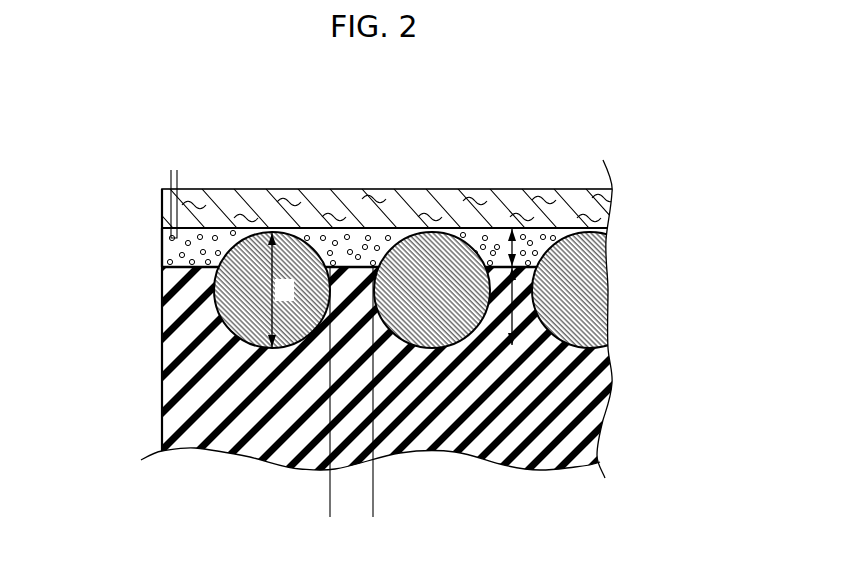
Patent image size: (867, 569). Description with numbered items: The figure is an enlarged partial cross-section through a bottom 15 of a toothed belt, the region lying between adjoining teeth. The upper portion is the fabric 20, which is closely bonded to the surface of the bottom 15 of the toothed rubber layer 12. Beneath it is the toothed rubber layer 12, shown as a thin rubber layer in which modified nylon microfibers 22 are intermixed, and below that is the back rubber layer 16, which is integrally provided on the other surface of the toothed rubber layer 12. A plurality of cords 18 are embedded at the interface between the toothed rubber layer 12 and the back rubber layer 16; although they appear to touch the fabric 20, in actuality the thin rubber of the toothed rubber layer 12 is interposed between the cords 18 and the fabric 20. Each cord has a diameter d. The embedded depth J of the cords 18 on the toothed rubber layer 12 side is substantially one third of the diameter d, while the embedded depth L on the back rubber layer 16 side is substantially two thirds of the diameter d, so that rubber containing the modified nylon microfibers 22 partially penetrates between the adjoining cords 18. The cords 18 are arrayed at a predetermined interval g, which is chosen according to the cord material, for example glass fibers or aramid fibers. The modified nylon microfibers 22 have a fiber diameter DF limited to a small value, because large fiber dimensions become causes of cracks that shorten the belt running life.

The toothed rubber layer 12 is at (362, 242).
The bottom 15 is at (272, 189).
The back rubber layer 16 is at (572, 408).
The cords 18 is at (230, 306).
The fabric 20 is at (567, 228).
The modified nylon microfibers 22 is at (162, 242).
The fiber diameter DF is at (197, 176).
The diameter d is at (283, 290).
The embedded depth J is at (510, 243).
The embedded depth L is at (511, 332).
The interval g is at (372, 499).